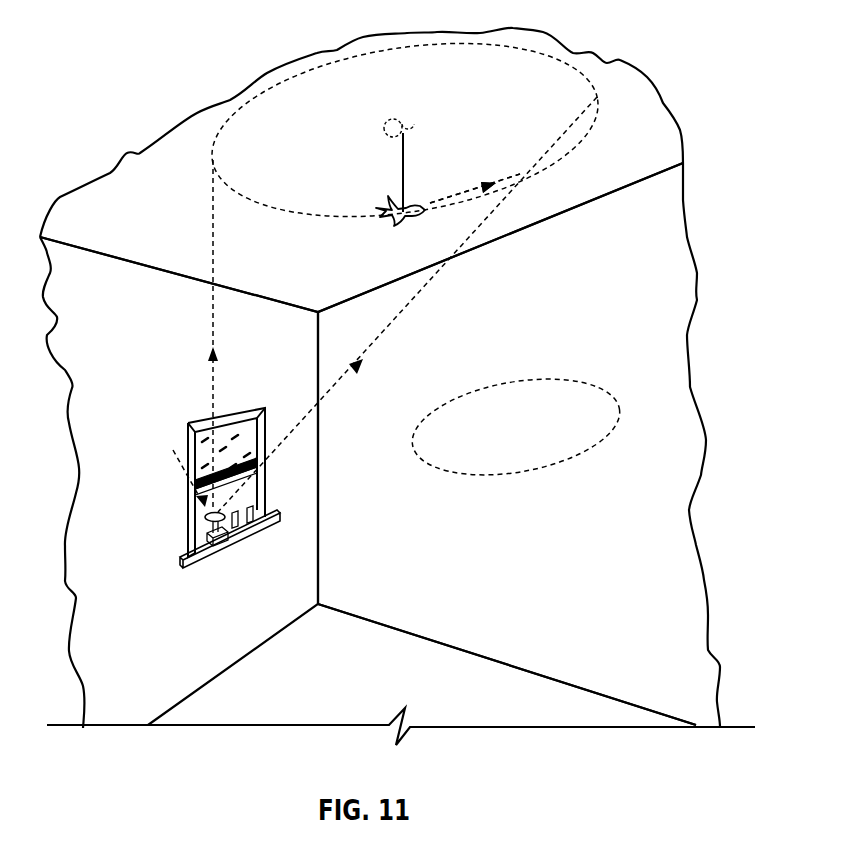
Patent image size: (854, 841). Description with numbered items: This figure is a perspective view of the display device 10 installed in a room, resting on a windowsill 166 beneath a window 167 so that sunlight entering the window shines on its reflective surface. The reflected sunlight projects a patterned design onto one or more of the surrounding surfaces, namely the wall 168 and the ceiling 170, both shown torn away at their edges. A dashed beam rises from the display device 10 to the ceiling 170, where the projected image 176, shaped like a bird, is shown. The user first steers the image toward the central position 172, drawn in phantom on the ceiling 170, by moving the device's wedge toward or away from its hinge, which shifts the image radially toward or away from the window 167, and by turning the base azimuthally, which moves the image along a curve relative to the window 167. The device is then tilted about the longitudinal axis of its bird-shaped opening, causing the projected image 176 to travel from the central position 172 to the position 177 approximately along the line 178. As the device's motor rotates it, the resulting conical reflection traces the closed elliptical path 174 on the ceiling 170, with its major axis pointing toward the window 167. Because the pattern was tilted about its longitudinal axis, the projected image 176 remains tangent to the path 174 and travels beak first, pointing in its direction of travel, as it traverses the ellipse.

The display device 10 is at (204, 528).
The windowsill 166 is at (218, 553).
The window 167 is at (191, 414).
The surrounding surface 168 is at (609, 349).
The ceiling 170 is at (340, 274).
The central position 172 is at (408, 116).
The elliptical path 174 is at (583, 56).
The projected image 176 is at (413, 217).
The position 177 is at (405, 200).
The line 178 is at (404, 158).